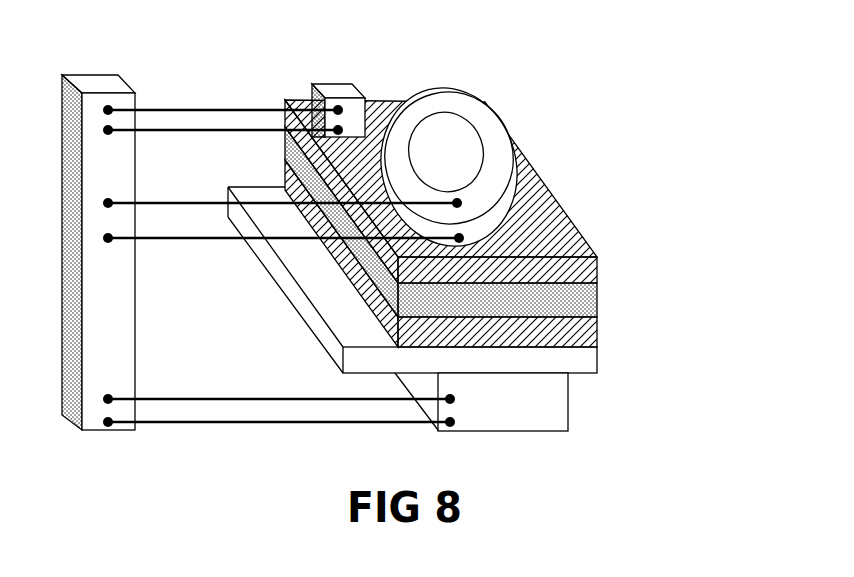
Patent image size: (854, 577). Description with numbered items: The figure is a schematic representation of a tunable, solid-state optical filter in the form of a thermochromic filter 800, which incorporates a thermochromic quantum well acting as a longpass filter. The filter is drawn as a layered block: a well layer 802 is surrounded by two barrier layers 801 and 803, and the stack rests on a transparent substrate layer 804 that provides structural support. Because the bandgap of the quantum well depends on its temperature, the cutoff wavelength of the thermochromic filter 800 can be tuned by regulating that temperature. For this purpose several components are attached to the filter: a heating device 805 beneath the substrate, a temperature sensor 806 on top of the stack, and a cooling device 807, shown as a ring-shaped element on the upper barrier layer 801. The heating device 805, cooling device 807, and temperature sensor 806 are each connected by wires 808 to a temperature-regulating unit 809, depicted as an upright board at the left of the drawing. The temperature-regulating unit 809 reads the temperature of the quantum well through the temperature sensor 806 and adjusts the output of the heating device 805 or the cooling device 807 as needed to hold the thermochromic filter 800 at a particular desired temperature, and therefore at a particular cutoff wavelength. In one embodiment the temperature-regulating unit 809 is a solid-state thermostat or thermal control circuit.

The thermochromic filter 800 is at (598, 165).
The barrier layer 801 is at (598, 258).
The well layer 802 is at (598, 300).
The barrier layer 803 is at (598, 335).
The transparent substrate layer 804 is at (320, 340).
The heating device 805 is at (513, 428).
The temperature sensor 806 is at (327, 88).
The cooling device 807 is at (443, 98).
The wires 808 is at (302, 422).
The temperature-regulating unit 809 is at (93, 430).